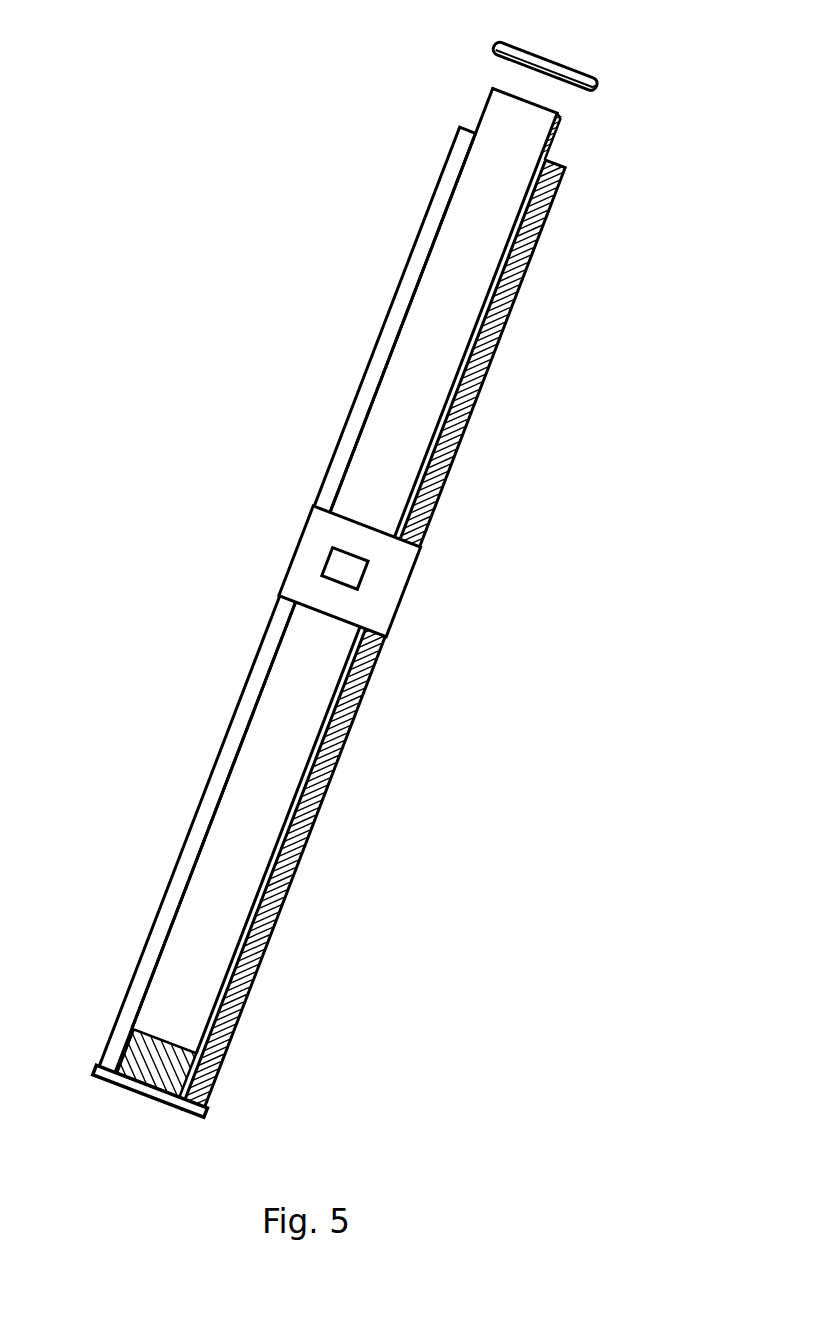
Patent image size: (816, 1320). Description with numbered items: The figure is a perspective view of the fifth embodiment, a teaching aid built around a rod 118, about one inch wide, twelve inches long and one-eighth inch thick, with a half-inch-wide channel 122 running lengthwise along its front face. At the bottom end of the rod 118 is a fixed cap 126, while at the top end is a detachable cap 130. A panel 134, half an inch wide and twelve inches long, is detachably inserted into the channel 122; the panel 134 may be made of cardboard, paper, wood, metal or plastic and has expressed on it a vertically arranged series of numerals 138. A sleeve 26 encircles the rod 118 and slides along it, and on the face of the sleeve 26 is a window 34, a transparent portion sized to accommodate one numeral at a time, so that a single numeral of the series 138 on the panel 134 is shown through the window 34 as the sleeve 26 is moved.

The rod 118 is at (552, 207).
The panel 134 is at (550, 140).
The series of numerals 138 is at (443, 335).
The channel 122 is at (150, 1060).
The fixed cap 126 is at (203, 1112).
The sleeve 26 is at (395, 623).
The window 34 is at (360, 578).
The detachable cap 130 is at (603, 90).